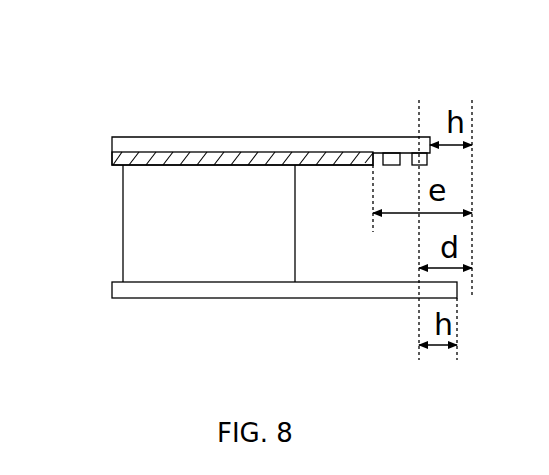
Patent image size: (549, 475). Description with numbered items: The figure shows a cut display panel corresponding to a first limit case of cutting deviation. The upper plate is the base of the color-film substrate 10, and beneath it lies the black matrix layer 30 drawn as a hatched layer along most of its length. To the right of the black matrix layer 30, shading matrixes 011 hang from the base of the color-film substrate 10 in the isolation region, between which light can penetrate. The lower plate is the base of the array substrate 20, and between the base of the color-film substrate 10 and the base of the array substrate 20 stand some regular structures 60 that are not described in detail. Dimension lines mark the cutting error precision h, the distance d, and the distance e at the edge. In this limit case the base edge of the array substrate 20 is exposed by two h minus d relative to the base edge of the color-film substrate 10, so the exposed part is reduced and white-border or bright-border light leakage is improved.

The base of a color-film substrate 10 is at (212, 148).
The black matrix layer 30 is at (316, 160).
The shading matrix 011 is at (419, 158).
The regular structures between the color-film substrate and the array substrate 60 is at (142, 252).
The base of an array substrate 20 is at (205, 290).